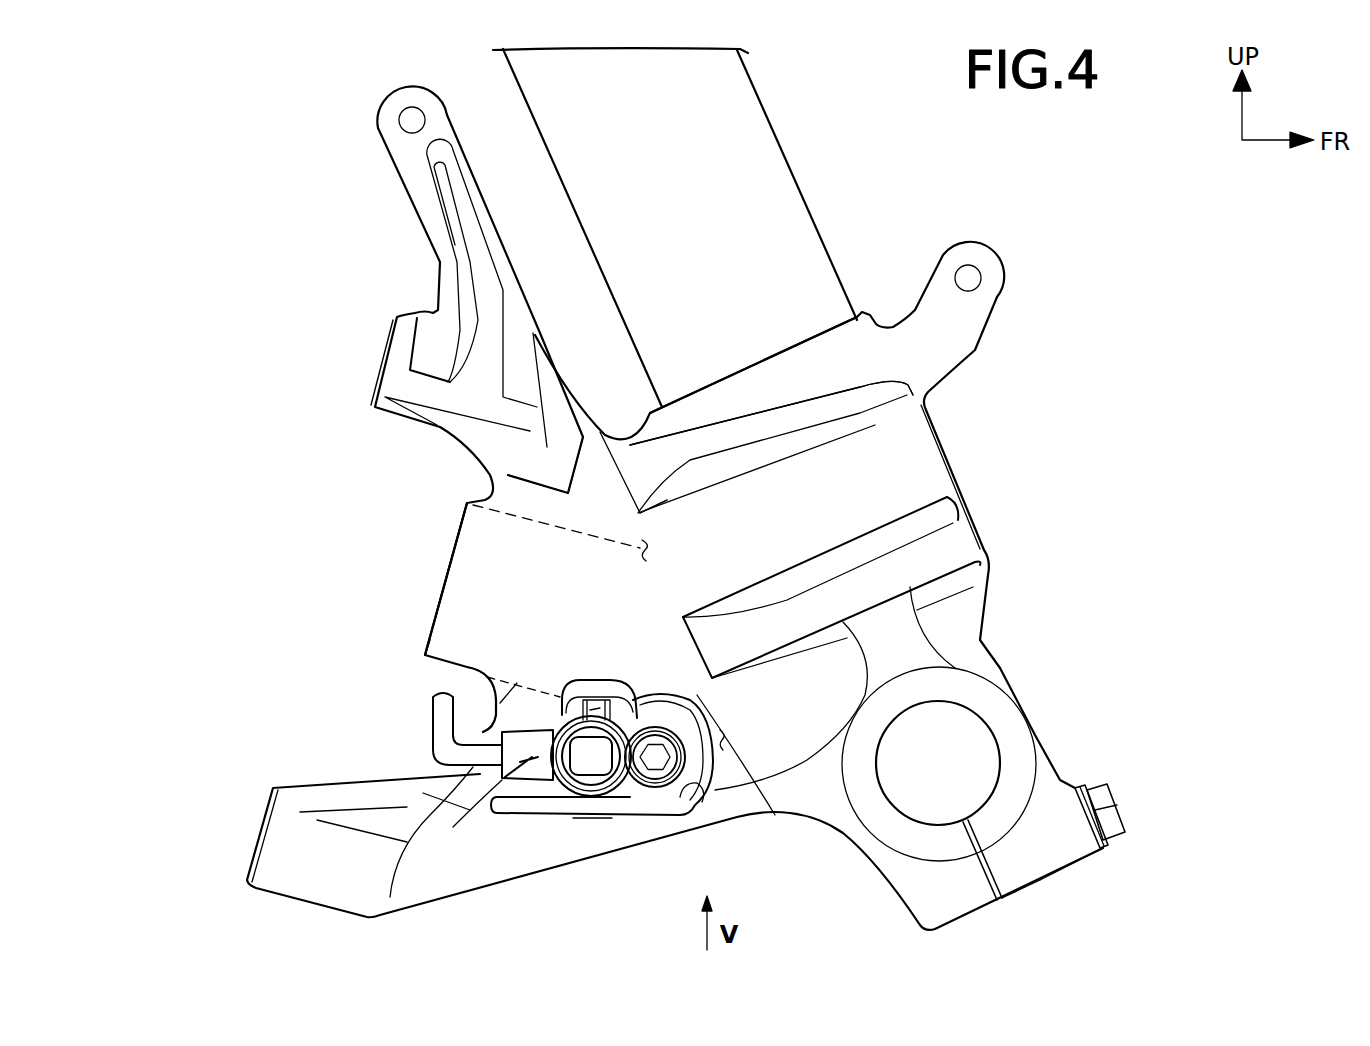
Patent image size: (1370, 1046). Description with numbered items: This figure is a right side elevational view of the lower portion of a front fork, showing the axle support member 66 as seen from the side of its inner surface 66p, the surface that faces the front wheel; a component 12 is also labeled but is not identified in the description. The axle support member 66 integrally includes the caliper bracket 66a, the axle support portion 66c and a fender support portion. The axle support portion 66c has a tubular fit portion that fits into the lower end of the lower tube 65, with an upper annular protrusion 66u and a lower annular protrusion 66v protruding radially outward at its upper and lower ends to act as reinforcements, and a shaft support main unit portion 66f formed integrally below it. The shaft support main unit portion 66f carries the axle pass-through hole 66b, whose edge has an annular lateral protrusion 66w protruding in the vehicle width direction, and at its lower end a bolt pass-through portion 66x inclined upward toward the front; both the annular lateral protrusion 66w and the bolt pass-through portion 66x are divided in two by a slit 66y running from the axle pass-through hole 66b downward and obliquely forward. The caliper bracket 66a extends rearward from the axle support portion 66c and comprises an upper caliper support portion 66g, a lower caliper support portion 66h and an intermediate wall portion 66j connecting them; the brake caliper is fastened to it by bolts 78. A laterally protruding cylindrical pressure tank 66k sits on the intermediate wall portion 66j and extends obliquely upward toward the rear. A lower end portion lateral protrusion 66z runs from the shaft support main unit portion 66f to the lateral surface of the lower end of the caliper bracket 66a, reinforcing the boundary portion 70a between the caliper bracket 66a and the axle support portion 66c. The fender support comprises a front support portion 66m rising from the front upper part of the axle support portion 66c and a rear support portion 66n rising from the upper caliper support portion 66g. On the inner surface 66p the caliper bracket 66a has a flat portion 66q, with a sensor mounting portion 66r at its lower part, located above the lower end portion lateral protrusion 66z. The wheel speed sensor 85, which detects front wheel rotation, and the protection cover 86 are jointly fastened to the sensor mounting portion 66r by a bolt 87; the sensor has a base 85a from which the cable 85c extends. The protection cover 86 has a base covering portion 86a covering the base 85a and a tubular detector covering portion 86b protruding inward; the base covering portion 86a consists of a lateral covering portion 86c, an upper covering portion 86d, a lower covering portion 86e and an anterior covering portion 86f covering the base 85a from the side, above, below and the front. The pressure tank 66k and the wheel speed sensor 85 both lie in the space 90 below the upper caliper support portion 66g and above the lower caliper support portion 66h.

The vehicle body frame 12 is at (803, 172).
The lower tube 65 is at (567, 83).
The axle support member 66 is at (880, 323).
The caliper bracket 66a is at (488, 494).
The axle pass-through hole 66b is at (982, 760).
The axle support portion 66c is at (940, 437).
The shaft support main unit portion 66f is at (1000, 668).
The upper caliper support portion 66g is at (395, 370).
The lower caliper support portion 66h is at (275, 857).
The intermediate wall portion 66j is at (548, 597).
The pressure tank 66k is at (477, 715).
The front support portion 66m is at (400, 160).
The rear support portion 66n is at (990, 264).
The inner surface 66p is at (478, 538).
The flat portion 66q is at (473, 588).
The sensor mounting portion 66r is at (597, 674).
The upper annular protrusion 66u is at (882, 340).
The lower annular protrusion 66v is at (920, 557).
The annular lateral protrusion 66w is at (1000, 813).
The bolt pass-through portion 66x is at (1073, 842).
The slit 66y is at (978, 872).
The lower end portion lateral protrusion 66z is at (738, 810).
The boundary portion 70a is at (684, 664).
The bolt 78 is at (1100, 800).
The wheel speed sensor 85 is at (470, 812).
The base 85a is at (593, 812).
The cable 85c is at (428, 737).
The protection cover 86 is at (535, 823).
The base covering portion 86a is at (580, 823).
The detector covering portion 86b is at (500, 783).
The lateral covering portion 86c is at (630, 800).
The upper covering portion 86d is at (716, 770).
The lower covering portion 86e is at (598, 818).
The anterior covering portion 86f is at (700, 792).
The bolt 87 is at (665, 795).
The space 90 is at (414, 609).